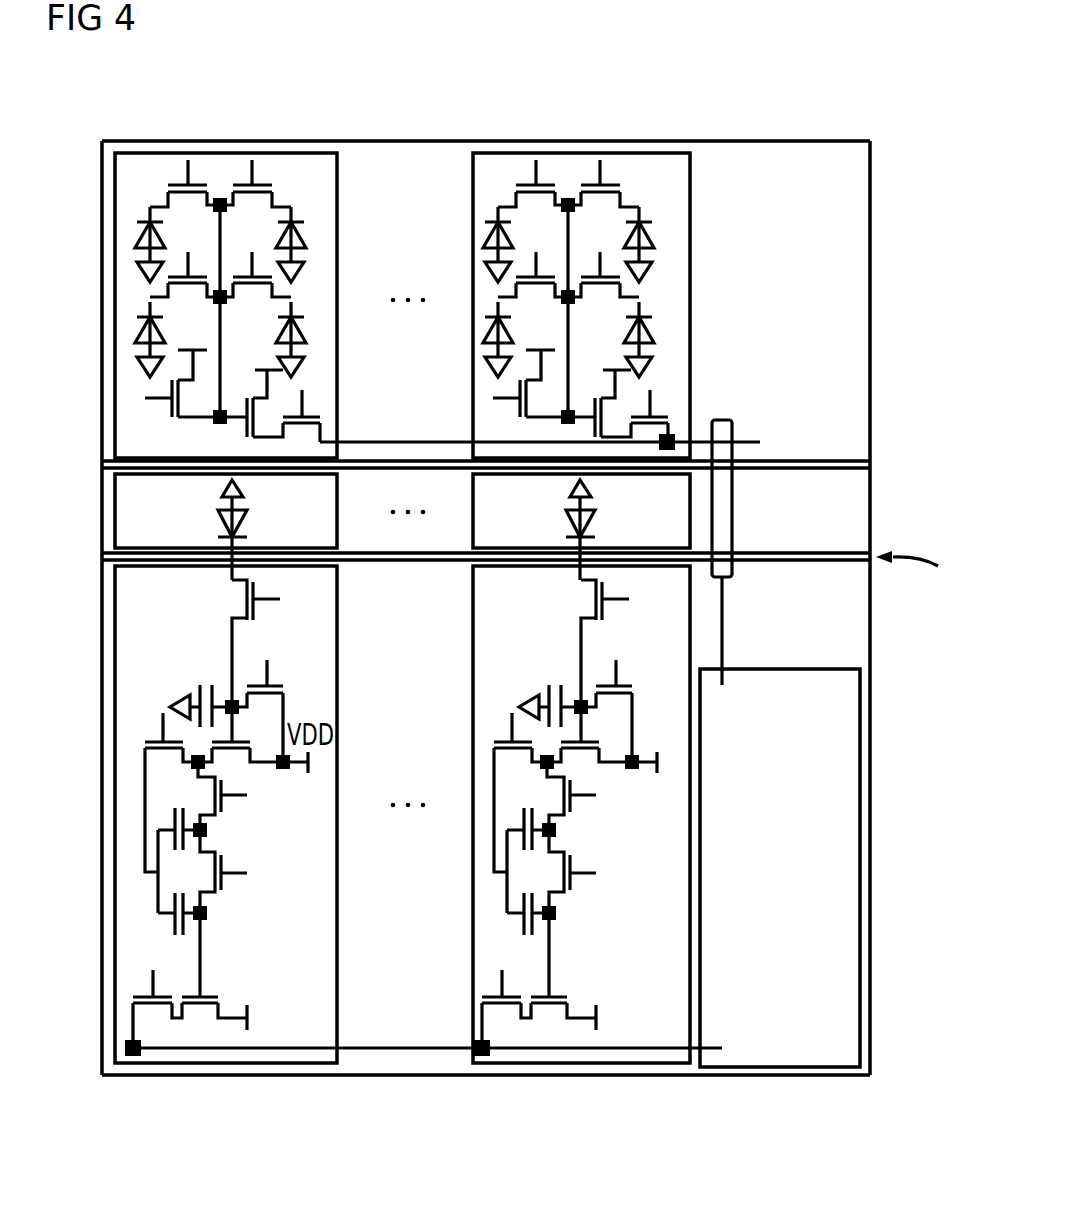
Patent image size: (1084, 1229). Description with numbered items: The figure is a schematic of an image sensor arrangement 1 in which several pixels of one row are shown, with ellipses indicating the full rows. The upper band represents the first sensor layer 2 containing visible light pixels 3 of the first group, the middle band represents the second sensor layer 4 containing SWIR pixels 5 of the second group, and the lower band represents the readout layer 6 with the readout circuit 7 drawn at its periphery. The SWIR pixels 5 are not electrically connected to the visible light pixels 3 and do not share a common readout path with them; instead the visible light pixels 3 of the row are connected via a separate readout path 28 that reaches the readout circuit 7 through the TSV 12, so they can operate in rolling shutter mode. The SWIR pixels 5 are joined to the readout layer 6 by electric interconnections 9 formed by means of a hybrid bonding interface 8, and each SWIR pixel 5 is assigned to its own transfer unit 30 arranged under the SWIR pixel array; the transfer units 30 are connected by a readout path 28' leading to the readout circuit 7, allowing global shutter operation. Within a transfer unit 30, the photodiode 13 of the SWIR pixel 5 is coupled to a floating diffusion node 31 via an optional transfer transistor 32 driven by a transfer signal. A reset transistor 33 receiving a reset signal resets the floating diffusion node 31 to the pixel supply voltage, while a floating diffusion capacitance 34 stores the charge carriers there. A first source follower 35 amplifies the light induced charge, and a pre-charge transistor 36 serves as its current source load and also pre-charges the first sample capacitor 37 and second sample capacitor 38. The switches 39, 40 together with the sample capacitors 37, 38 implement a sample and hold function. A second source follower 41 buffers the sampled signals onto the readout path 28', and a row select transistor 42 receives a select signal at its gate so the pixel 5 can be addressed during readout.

The image sensor arrangement 1 is at (872, 112).
The first sensor layer 2 is at (100, 310).
The pixel of the first group 3 is at (117, 268).
The second sensor layer 4 is at (100, 535).
The pixel of the second group 5 is at (115, 495).
The readout layer 6 is at (100, 768).
The readout circuit 7 is at (780, 1060).
The hybrid bonding interface 8 is at (914, 567).
The electric interconnection 9 is at (236, 546).
The TSV 12 is at (722, 422).
The photodiode 13 is at (218, 523).
The readout path 28 is at (540, 415).
The readout path 28' is at (427, 1016).
The transfer unit 30 is at (583, 1063).
The floating diffusion node 31 is at (232, 700).
The transfer transistor 32 is at (245, 602).
The reset transistor 33 is at (268, 672).
The floating diffusion capacitance 34 is at (200, 690).
The first source follower 35 is at (233, 755).
The pre-charge transistor 36 is at (162, 735).
The first sample capacitor 37 is at (158, 823).
The second sample capacitor 38 is at (158, 905).
The switch 39 is at (224, 812).
The switch 40 is at (224, 880).
The second source follower 41 is at (208, 995).
The row select transistor 42 is at (135, 998).